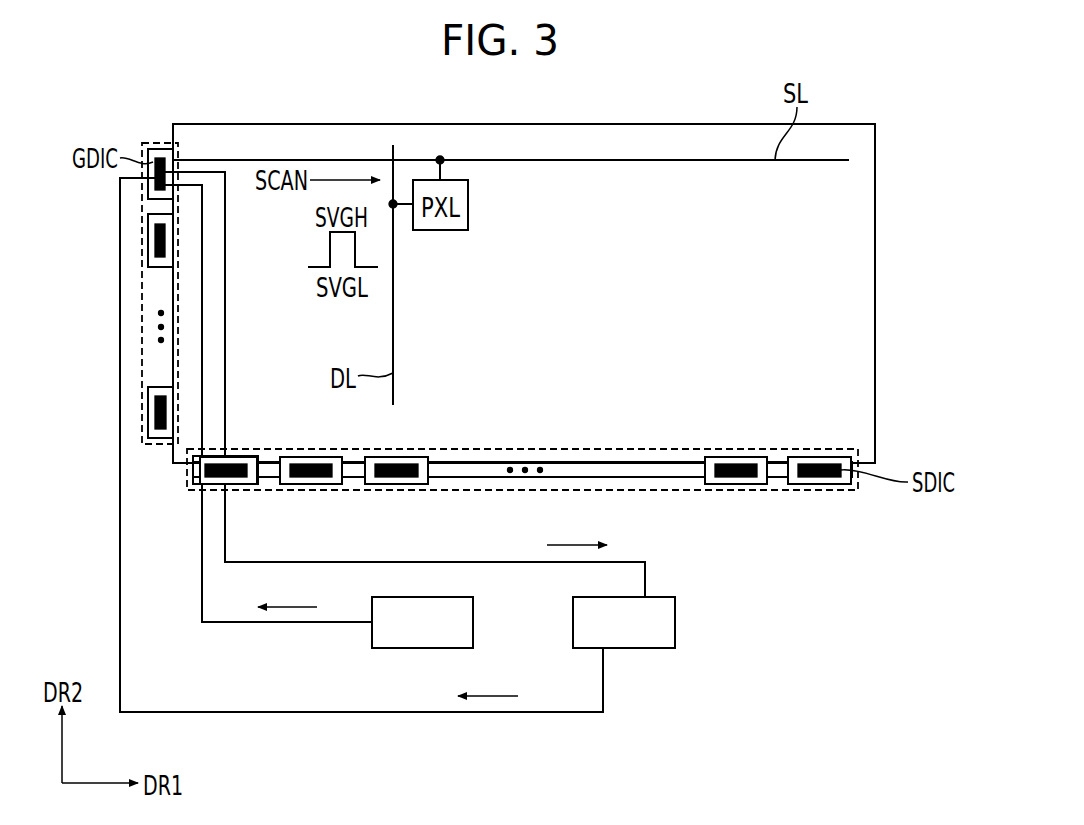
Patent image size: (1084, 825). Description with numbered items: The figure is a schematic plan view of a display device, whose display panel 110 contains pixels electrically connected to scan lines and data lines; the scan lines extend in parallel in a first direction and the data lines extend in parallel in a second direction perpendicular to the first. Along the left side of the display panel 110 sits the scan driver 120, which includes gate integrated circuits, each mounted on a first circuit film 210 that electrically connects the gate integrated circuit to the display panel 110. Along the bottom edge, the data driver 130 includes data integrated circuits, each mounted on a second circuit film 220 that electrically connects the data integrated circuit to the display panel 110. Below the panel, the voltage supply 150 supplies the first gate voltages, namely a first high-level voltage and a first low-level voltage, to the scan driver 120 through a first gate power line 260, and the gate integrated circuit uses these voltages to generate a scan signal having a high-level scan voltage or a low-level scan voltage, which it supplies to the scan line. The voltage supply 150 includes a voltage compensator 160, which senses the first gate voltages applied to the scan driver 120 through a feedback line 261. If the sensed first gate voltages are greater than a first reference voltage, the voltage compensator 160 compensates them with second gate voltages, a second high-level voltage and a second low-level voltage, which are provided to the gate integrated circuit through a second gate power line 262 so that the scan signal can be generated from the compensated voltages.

The display panel 110 is at (875, 290).
The scan driver 120 is at (142, 293).
The data driver 130 is at (787, 490).
The voltage supply 150 is at (473, 628).
The voltage compensator 160 is at (675, 628).
The first circuit film 210 is at (143, 195).
The second circuit film 220 is at (841, 486).
The first gate power line 260 is at (202, 593).
The feedback line 261 is at (432, 562).
The second gate power line 262 is at (367, 714).